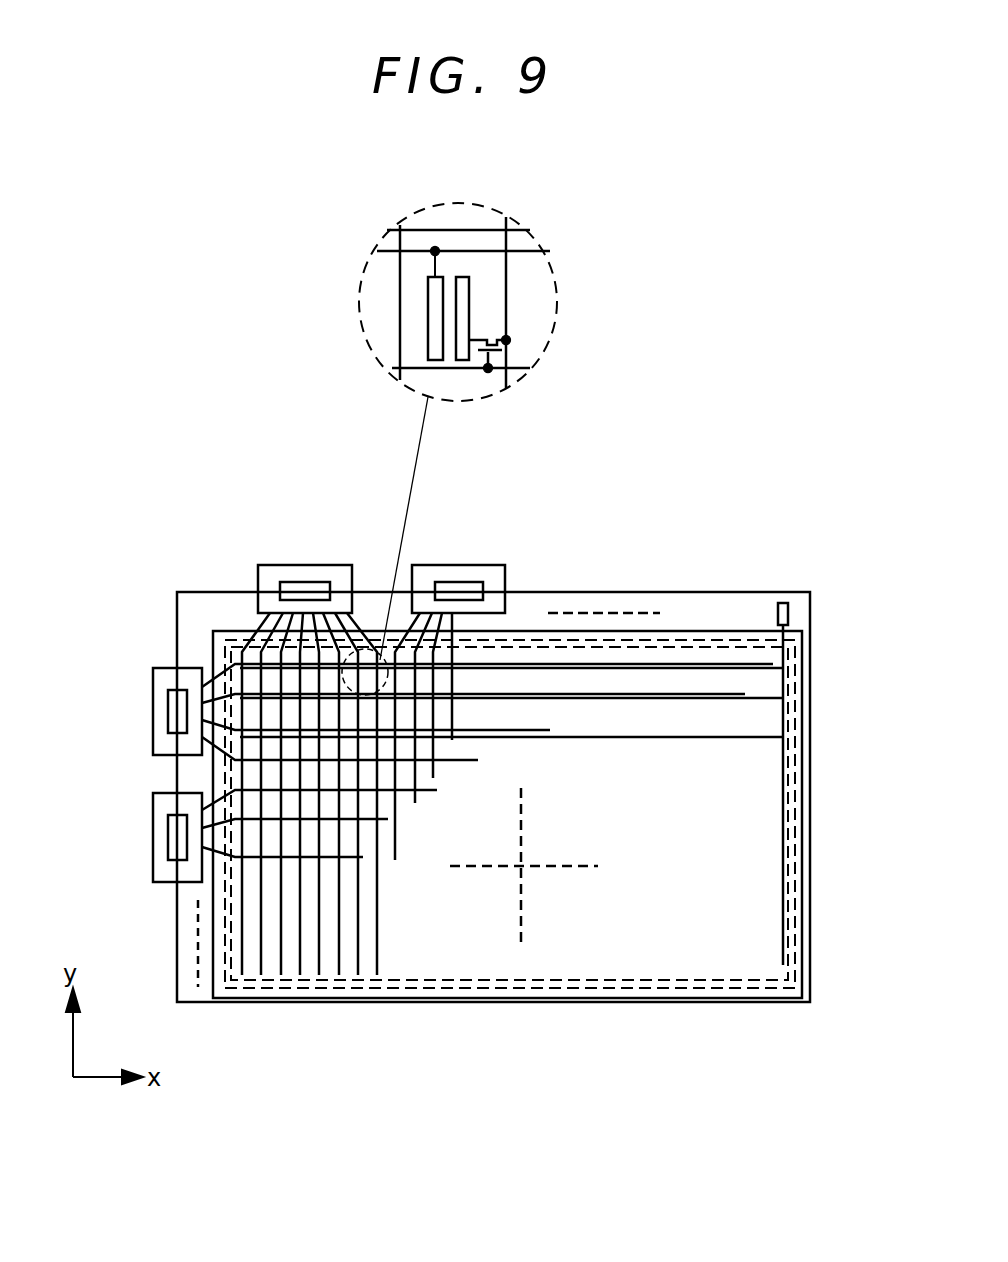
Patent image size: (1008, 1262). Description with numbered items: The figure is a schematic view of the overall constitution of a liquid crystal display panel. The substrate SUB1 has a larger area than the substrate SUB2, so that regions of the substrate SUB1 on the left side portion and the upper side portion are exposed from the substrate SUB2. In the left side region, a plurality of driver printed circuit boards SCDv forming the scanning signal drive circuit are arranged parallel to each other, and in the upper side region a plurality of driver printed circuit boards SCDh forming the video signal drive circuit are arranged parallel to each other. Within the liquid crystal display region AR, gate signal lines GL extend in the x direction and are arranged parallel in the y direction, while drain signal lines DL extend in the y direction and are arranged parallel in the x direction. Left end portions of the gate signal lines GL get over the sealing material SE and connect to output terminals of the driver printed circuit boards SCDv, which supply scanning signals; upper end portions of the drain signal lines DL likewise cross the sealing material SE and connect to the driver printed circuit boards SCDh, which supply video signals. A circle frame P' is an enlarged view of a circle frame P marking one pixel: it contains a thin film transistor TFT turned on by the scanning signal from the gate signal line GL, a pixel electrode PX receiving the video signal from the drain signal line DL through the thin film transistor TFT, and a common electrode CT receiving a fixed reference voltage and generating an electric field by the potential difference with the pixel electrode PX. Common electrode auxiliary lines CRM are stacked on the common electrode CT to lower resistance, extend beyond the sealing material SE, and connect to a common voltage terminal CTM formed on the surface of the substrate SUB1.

The circle frame P' is at (458, 418).
The drain signal line DL is at (506, 268).
The common electrode auxiliary line CRM is at (458, 249).
The common electrode CT is at (430, 307).
The pixel electrode PX is at (470, 313).
The thin film transistor TFT is at (503, 355).
The gate signal line GL is at (425, 368).
The substrate SUB1 is at (232, 592).
The substrate SUB2 is at (213, 932).
The sealing material SE is at (490, 988).
The driver printed circuit board SCDh is at (305, 565).
The driver printed circuit board SCDv is at (152, 707).
The common voltage terminal CTM is at (789, 612).
The circle frame P is at (376, 672).
The liquid crystal display region AR is at (585, 876).